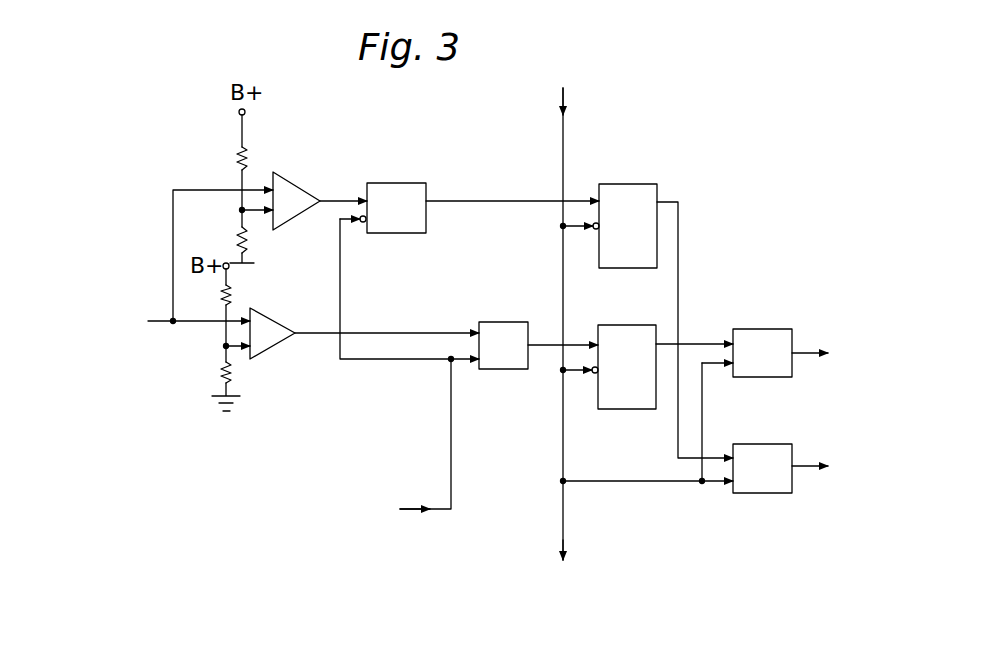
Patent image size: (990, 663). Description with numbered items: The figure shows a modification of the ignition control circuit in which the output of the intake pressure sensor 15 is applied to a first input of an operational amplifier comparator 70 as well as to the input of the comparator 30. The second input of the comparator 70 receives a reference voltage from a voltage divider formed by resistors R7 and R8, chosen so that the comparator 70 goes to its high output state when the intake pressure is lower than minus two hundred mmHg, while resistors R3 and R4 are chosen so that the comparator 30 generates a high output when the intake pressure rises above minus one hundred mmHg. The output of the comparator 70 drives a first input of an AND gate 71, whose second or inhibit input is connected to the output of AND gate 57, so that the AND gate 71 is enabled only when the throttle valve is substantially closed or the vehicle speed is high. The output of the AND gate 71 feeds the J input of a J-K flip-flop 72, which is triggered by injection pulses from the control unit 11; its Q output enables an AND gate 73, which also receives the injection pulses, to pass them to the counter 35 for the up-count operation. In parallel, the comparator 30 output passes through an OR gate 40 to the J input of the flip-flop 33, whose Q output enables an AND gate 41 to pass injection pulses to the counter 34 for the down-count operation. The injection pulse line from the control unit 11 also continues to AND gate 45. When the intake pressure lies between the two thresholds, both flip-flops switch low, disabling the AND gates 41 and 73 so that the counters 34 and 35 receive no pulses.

The operational amplifier comparator 70 is at (290, 182).
The AND gate 71 is at (397, 183).
The J-K flip-flop 72 is at (629, 184).
The operational amplifier comparator 30 is at (284, 326).
The OR gate 40 is at (497, 322).
The J-K flip-flop 33 is at (623, 325).
The AND gate 41 is at (762, 329).
The AND gate 73 is at (761, 444).
The resistor R7 is at (229, 155).
The resistor R8 is at (229, 236).
The resistor R3 is at (213, 293).
The resistor R4 is at (210, 373).
The control unit 11 is at (563, 133).
The intake pressure sensor 15 is at (98, 334).
The counter 34 is at (877, 352).
The counter 35 is at (872, 469).
The AND gate 45 is at (633, 567).
The AND gate 57 is at (379, 464).